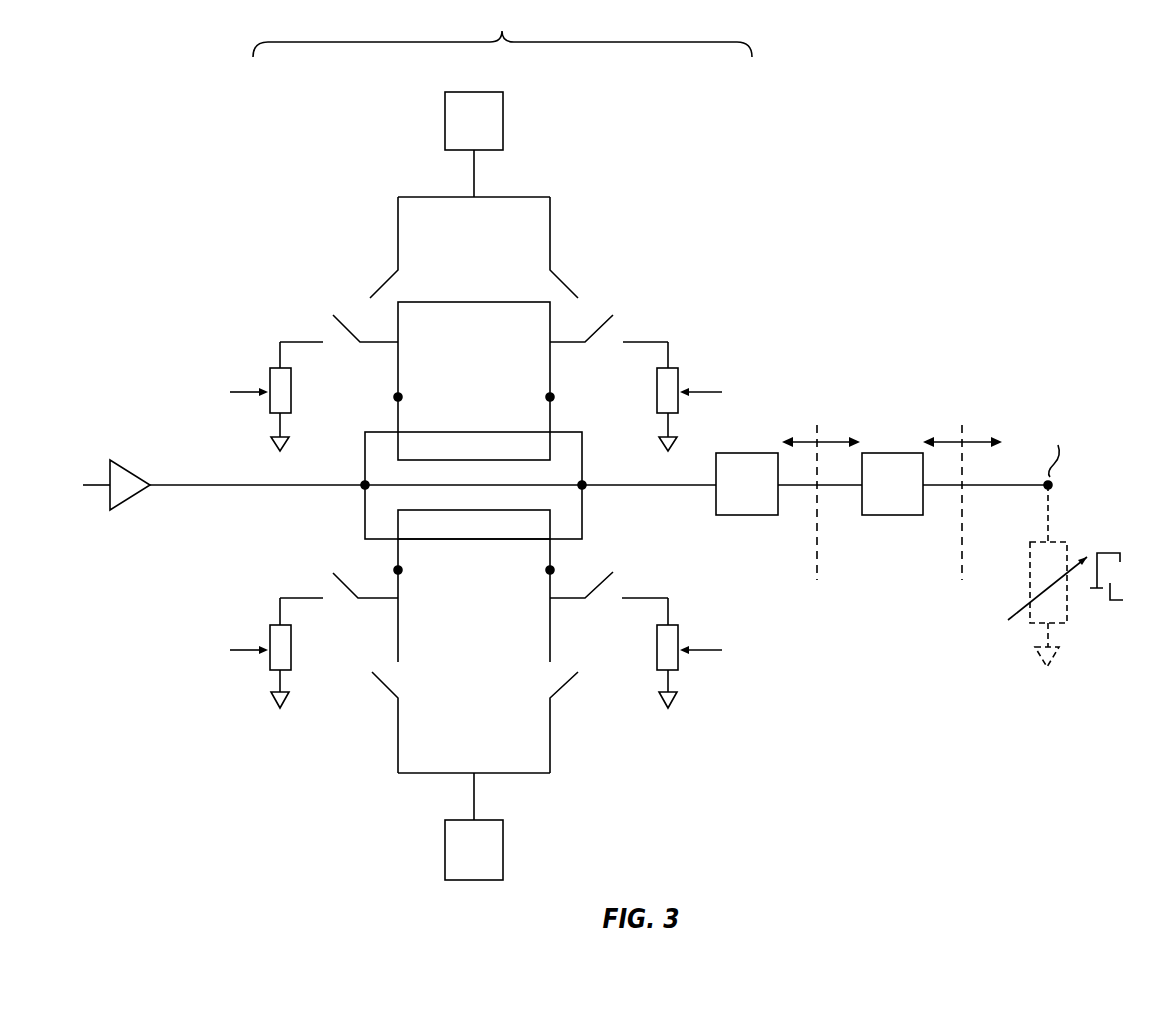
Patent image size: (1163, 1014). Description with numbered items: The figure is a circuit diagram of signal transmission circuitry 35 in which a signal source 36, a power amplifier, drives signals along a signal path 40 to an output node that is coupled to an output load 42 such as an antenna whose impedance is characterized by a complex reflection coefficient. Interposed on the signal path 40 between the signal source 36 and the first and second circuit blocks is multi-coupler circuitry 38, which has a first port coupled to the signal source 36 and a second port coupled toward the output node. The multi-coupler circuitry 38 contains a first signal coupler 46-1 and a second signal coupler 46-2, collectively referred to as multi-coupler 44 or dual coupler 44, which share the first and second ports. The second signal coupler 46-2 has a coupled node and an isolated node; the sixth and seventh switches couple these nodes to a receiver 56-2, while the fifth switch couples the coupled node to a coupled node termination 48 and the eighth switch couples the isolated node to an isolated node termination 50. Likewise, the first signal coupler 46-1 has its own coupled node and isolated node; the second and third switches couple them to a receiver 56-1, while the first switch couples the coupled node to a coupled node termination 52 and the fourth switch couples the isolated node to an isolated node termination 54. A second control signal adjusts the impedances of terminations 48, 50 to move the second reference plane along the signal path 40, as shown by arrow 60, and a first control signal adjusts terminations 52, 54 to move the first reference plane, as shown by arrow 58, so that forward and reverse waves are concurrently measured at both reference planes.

The signal transmission circuitry 35 is at (1027, 210).
The signal source 36 is at (130, 500).
The multi-coupler circuitry 38 is at (502, 414).
The signal path 40 is at (337, 482).
The output load 42 is at (1067, 618).
The multi-coupler 44 is at (585, 517).
The first signal coupler 46-1 is at (478, 452).
The second signal coupler 46-2 is at (485, 520).
The coupled node termination 48 is at (260, 677).
The isolated node termination 50 is at (688, 677).
The coupled node termination 52 is at (260, 357).
The isolated node termination 54 is at (688, 358).
The receiver 56-1 is at (503, 118).
The receiver 56-2 is at (503, 845).
The arrow 58 is at (828, 440).
The arrow 60 is at (973, 440).